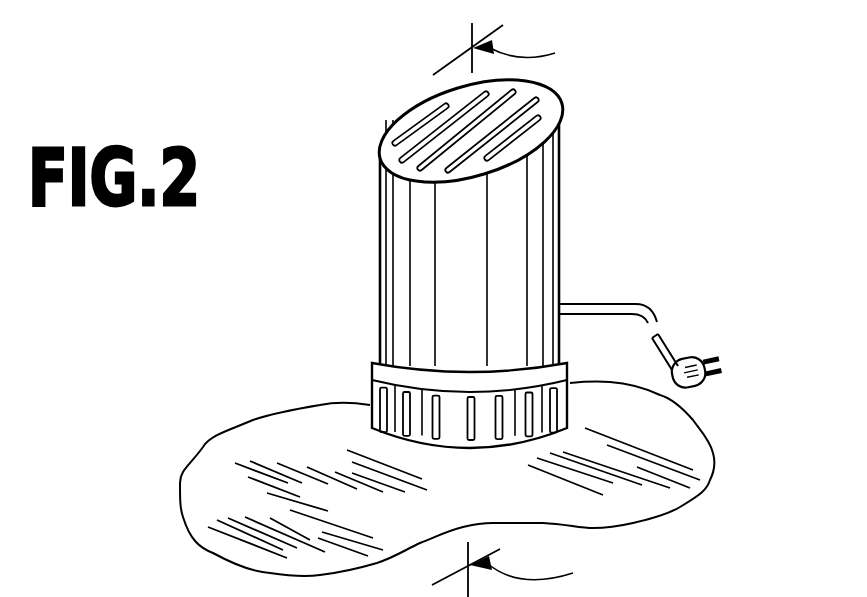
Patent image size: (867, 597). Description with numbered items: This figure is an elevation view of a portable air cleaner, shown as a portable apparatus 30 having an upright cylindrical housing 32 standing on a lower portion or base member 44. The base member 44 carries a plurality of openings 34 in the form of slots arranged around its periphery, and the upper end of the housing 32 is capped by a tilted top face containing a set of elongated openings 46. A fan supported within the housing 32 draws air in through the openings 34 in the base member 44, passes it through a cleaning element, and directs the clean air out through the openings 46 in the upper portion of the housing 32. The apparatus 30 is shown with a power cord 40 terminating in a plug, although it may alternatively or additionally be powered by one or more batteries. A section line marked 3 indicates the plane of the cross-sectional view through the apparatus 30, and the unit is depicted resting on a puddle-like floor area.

The portable apparatus 30 is at (648, 130).
The housing 32 is at (538, 230).
The openings 34 is at (465, 427).
The power cord 40 is at (667, 342).
The lower portion or base member 44 is at (377, 372).
The openings 46 is at (437, 122).
The section line for FIG. 3 is at (515, 310).